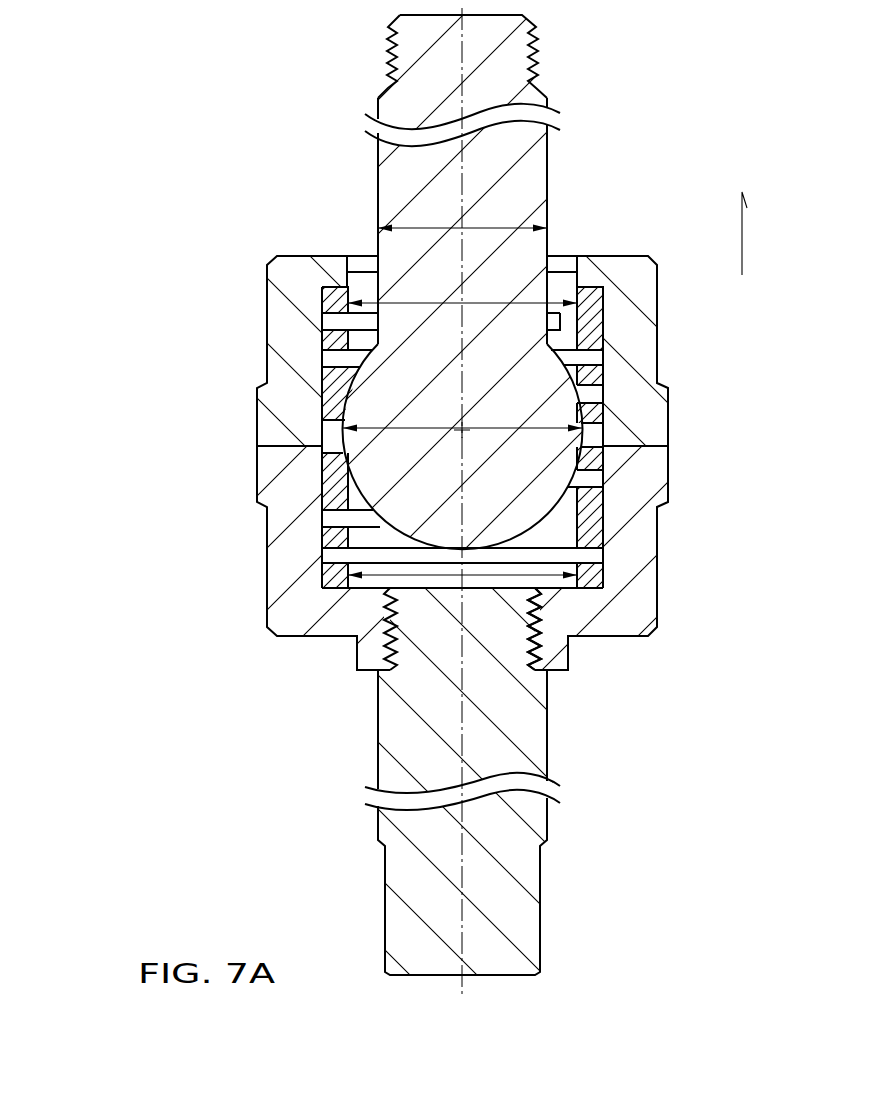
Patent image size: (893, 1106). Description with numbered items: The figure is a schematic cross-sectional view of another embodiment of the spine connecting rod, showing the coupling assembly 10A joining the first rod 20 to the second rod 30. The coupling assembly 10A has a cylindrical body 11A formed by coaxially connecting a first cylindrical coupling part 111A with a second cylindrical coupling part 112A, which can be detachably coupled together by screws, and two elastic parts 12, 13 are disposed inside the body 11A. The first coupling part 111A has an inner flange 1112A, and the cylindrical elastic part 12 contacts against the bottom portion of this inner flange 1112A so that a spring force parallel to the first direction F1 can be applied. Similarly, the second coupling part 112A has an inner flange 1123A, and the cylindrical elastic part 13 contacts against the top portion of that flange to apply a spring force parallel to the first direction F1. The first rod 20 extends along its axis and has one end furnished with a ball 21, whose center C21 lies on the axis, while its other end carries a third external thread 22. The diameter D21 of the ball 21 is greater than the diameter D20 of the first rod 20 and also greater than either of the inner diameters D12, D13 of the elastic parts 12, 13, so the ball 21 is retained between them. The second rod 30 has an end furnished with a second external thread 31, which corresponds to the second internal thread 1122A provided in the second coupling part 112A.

The coupling assembly 10A is at (85, 313).
The body 11A is at (151, 395).
The first coupling part 111A is at (256, 418).
The second coupling part 112A is at (256, 470).
The inner flange 1112A is at (360, 282).
The second internal thread 1122A is at (531, 633).
The inner flange 1123A is at (333, 598).
The elastic part 12 is at (320, 339).
The elastic part 13 is at (320, 552).
The first rod 20 is at (376, 180).
The ball 21 is at (558, 360).
The third external thread 22 is at (387, 47).
The second rod 30 is at (376, 762).
The second external thread 31 is at (530, 634).
The diameter of the first rod D20 is at (436, 226).
The inner diameter of the elastic part D12 is at (500, 301).
The diameter of the ball D21 is at (417, 426).
The center of the ball C21 is at (461, 434).
The inner diameter of the elastic part D13 is at (525, 573).
The first direction F1 is at (763, 233).